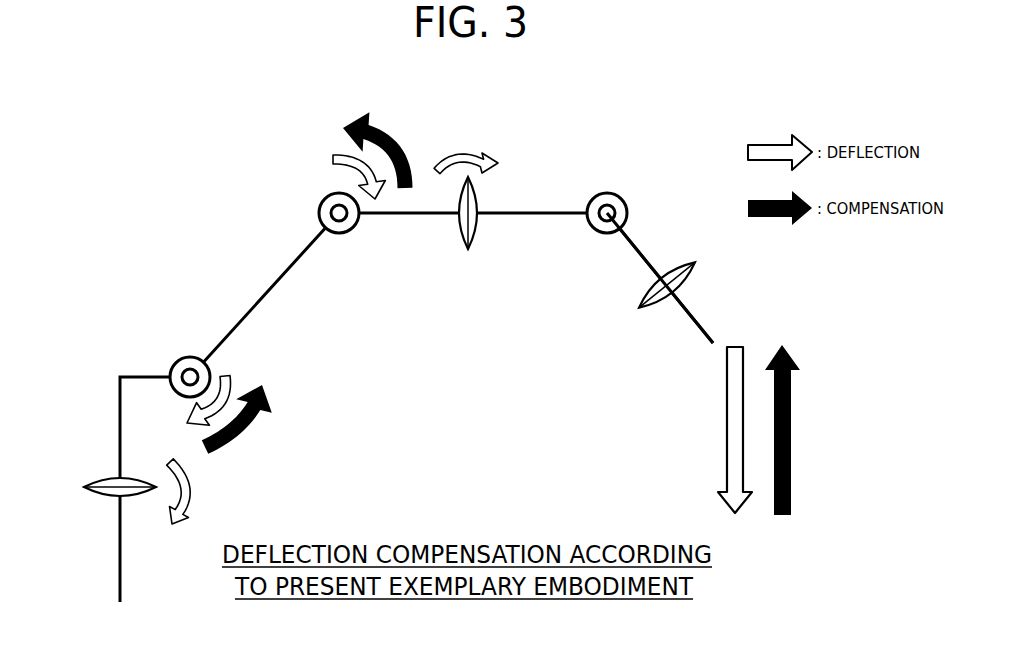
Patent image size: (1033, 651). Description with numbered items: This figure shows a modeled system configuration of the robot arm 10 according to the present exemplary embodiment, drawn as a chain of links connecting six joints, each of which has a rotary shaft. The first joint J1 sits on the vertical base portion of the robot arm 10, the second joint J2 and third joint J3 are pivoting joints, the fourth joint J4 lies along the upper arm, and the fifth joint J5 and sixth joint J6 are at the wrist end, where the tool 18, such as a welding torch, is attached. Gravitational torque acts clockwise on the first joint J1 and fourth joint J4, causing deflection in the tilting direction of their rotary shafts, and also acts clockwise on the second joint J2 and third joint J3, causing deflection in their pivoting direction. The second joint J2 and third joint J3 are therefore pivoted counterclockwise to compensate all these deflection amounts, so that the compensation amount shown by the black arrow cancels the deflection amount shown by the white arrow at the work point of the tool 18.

The robot arm 10 is at (373, 357).
The tool 18 is at (665, 305).
The first joint J1 is at (105, 482).
The second joint J2 is at (188, 357).
The third joint J3 is at (323, 197).
The fourth joint J4 is at (475, 230).
The fifth joint J5 is at (607, 188).
The sixth joint J6 is at (673, 263).